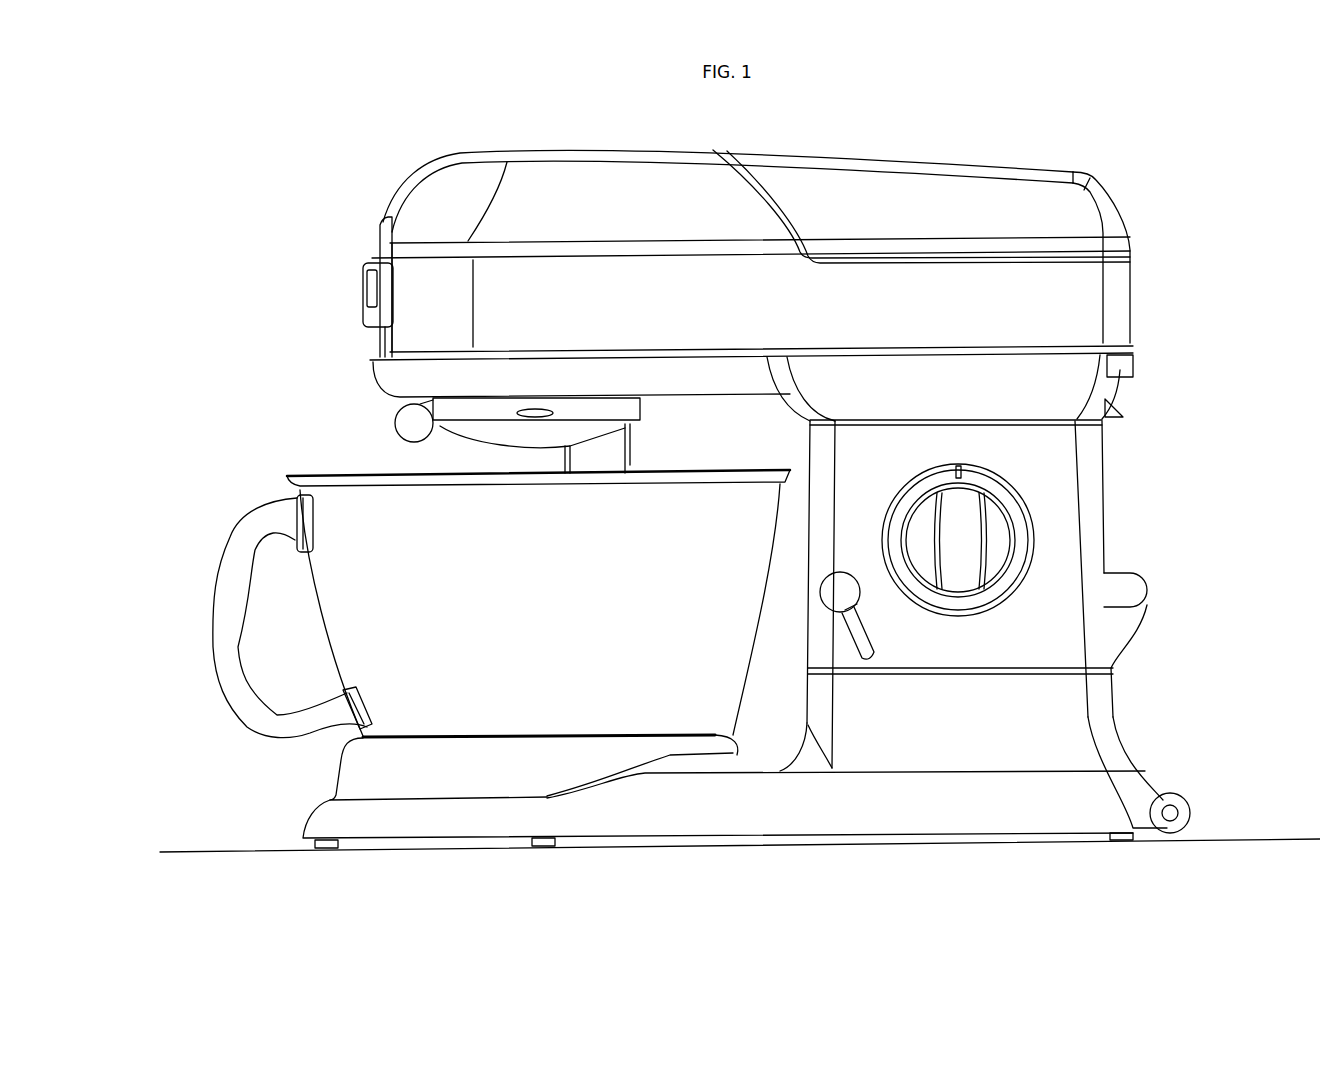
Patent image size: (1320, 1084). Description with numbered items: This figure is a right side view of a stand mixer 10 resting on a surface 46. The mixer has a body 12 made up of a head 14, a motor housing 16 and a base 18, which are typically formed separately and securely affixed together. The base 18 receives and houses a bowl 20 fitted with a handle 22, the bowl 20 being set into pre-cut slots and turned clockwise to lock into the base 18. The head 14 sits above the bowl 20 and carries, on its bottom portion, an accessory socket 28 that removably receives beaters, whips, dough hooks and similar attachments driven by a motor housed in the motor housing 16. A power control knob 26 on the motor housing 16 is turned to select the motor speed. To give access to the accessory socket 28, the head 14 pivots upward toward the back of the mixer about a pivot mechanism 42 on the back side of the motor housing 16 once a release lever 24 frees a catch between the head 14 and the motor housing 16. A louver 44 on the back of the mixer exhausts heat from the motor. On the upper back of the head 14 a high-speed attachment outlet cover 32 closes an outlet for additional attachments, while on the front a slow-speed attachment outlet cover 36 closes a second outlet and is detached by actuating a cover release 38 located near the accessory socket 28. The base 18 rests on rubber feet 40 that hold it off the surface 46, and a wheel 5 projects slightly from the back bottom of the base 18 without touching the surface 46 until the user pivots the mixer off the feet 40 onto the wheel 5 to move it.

The wheel 5 is at (1182, 806).
The stand mixer 10 is at (326, 181).
The body 12 is at (1069, 315).
The head 14 is at (545, 190).
The motor housing 16 is at (1060, 462).
The base 18 is at (1068, 742).
The bowl 20 is at (622, 703).
The handle 22 is at (228, 678).
The release lever 24 is at (868, 652).
The power control knob 26 is at (967, 540).
The accessory socket 28 is at (580, 462).
The high-speed attachment outlet cover 32 is at (1042, 204).
The slow-speed attachment outlet cover 36 is at (374, 252).
The slow-speed attachment outlet cover release 38 is at (412, 425).
The feet 40 is at (328, 850).
The pivot mechanism 42 is at (1130, 594).
The louver 44 is at (1127, 365).
The surface 46 is at (220, 852).